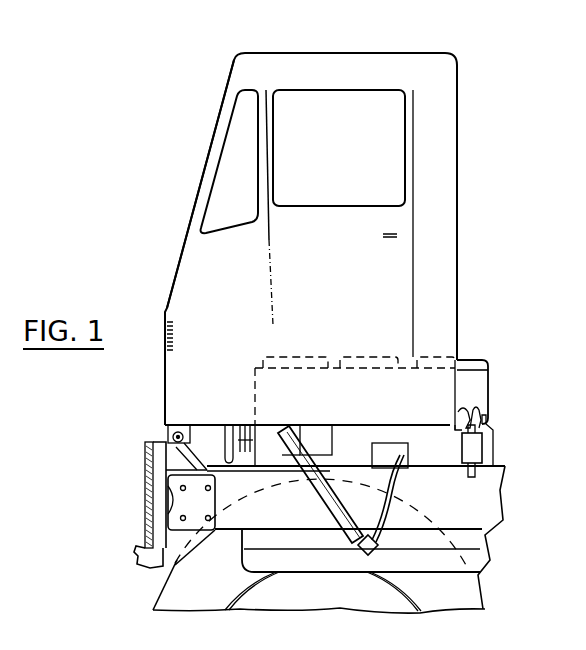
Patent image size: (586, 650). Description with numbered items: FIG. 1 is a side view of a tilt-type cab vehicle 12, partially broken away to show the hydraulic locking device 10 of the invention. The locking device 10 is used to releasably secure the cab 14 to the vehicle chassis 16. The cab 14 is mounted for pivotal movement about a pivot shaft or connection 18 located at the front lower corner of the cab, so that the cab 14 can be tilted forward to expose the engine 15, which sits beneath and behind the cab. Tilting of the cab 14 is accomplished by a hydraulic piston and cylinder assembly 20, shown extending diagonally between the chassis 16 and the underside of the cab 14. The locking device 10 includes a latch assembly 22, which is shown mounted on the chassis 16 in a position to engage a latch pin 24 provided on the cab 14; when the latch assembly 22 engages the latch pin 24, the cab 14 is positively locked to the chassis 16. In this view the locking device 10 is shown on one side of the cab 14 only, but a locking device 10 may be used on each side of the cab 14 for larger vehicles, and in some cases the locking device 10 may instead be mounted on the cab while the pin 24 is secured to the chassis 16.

The locking device 10 is at (490, 441).
The tilt-type cab vehicle 12 is at (467, 272).
The cab 14 is at (178, 257).
The engine 15 is at (473, 360).
The vehicle chassis 16 is at (145, 486).
The pivot shaft or connection 18 is at (168, 436).
The hydraulic piston and cylinder assembly 20 is at (322, 497).
The latch assembly 22 is at (462, 446).
The latch pin 24 is at (474, 412).